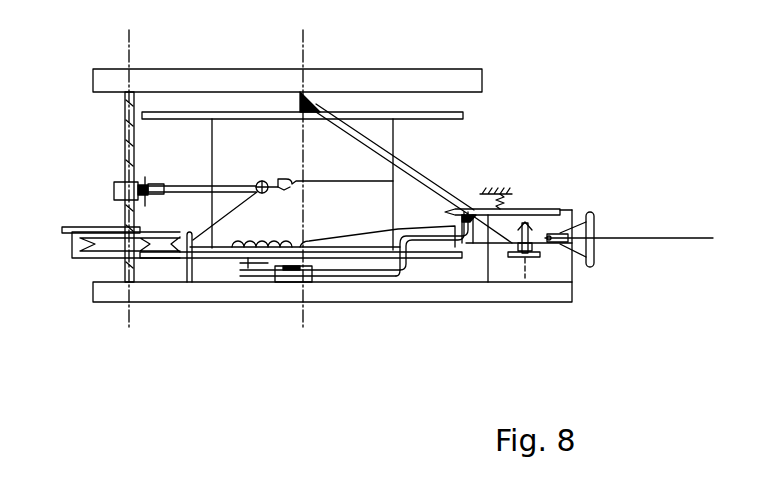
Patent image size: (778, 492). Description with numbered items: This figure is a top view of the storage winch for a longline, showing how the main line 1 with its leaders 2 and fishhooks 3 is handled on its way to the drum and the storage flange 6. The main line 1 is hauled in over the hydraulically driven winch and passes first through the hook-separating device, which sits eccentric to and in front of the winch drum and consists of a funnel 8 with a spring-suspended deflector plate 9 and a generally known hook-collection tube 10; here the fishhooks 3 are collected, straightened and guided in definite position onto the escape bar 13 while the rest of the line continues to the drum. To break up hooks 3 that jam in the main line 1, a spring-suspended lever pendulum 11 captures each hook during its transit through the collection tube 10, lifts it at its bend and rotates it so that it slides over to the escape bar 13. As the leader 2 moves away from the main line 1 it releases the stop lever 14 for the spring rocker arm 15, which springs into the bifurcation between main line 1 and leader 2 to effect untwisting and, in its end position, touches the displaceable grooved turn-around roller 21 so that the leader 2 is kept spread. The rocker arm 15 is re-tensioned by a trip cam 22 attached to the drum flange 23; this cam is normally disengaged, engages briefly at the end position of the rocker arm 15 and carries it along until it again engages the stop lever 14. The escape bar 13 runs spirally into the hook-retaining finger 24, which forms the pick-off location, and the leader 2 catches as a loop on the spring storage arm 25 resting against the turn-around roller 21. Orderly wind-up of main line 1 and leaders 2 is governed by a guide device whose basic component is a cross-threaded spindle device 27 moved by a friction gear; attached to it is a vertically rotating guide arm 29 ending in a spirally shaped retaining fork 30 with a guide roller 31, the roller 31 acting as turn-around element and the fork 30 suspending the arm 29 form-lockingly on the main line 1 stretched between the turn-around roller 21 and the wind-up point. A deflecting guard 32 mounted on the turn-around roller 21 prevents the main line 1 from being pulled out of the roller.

The main line 1 is at (316, 179).
The leader 2 is at (388, 228).
The fishhook 3 is at (478, 212).
The flange 6 is at (372, 110).
The funnel 8 is at (594, 258).
The spring-suspended deflector plate 9 is at (568, 235).
The hook-collection tube 10 is at (545, 232).
The spring-suspended lever pendulum 11 is at (535, 258).
The escape bar 13 is at (446, 195).
The stop lever 14 is at (463, 217).
The spring rocker arm 15 is at (370, 272).
The turn-around roller 21 is at (87, 240).
The trip cam 22 is at (262, 272).
The drum flange 23 is at (150, 258).
The hook-retaining finger 24 is at (402, 233).
The storage arm 25 is at (110, 230).
The cross-threaded spindle device 27 is at (115, 187).
The guide arm 29 is at (178, 186).
The retaining fork 30 is at (283, 178).
The guide roller 31 is at (257, 183).
The deflecting guard 32 is at (193, 278).